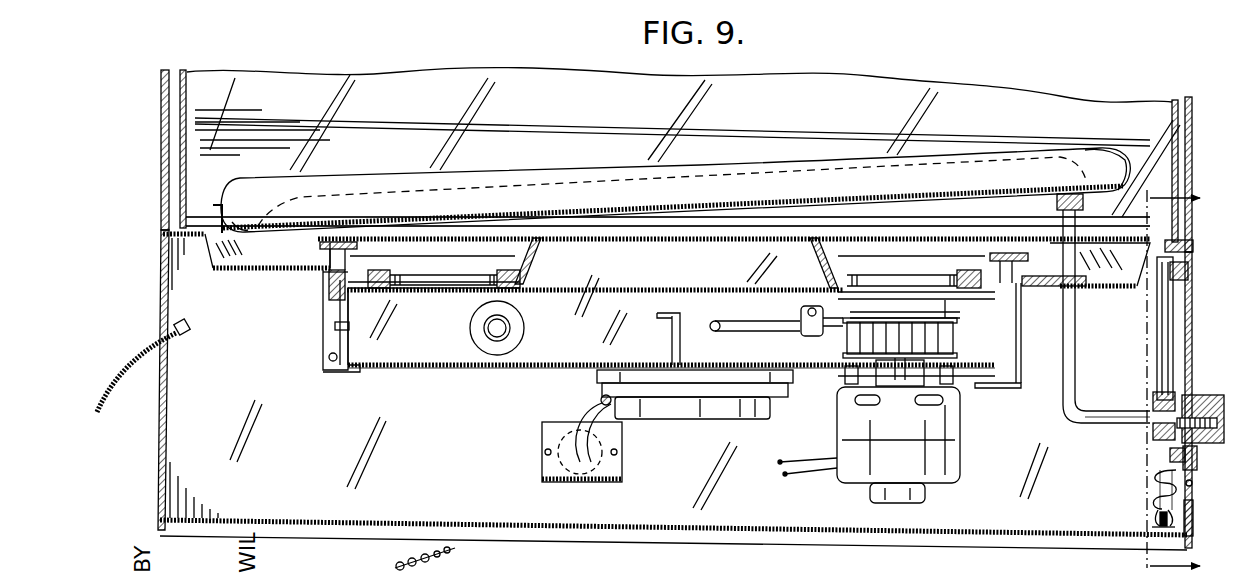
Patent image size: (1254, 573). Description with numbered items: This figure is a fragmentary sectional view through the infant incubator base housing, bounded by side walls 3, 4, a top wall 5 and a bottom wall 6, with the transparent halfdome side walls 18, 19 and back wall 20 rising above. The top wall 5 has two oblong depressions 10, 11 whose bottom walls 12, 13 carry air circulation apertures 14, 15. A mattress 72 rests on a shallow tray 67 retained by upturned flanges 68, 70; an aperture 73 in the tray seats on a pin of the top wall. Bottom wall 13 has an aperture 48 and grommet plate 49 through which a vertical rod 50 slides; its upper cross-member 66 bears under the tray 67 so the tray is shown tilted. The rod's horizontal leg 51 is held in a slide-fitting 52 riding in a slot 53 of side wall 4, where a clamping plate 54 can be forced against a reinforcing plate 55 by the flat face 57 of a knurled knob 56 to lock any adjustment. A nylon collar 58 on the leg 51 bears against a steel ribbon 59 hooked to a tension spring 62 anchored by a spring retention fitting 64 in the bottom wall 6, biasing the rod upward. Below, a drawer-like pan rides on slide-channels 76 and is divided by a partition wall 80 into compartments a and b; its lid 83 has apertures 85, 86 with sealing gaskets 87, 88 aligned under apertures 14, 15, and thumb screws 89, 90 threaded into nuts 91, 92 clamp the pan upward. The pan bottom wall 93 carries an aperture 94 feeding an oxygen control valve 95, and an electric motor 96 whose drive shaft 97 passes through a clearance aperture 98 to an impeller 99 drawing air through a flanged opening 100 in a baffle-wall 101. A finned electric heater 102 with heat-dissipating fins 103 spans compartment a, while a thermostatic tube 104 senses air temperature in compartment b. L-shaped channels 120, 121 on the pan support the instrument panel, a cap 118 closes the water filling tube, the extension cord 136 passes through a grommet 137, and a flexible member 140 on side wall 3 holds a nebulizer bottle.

The side wall 3 is at (160, 323).
The side wall 4 is at (1190, 271).
The top wall 5 is at (703, 242).
The bottom wall 6 is at (723, 526).
The depression 10 is at (253, 258).
The depression 11 is at (928, 248).
The bottom wall 12 is at (287, 273).
The bottom wall 13 is at (1106, 290).
The air circulation aperture 14 is at (455, 270).
The air circulation aperture 15 is at (872, 262).
The side wall 18 is at (163, 120).
The side wall 19 is at (1192, 130).
The back wall 20 is at (998, 103).
The aperture 48 is at (1068, 288).
The grommet plate 49 is at (1092, 275).
The vertical rod 50 is at (1072, 328).
The horizontal leg 51 is at (1120, 422).
The slide-fitting 52 is at (1170, 457).
The slot 53 is at (1193, 329).
The clamping plate 54 is at (1198, 461).
The reinforcing plate 55 is at (1195, 526).
The knurled knob 56 is at (1226, 400).
The flat face 57 is at (1205, 395).
The nylon collar 58 is at (1154, 400).
The steel ribbon 59 is at (1158, 345).
The tension spring 62 is at (1150, 485).
The spring retention fitting 64 is at (1155, 523).
The cross-member 66 is at (1058, 205).
The tray 67 is at (892, 193).
The marginal flange 68 is at (218, 205).
The marginal flange 70 is at (1132, 175).
The mattress 72 is at (548, 175).
The aperture 73 is at (240, 232).
The slide-channel 76 is at (326, 343).
The partition wall 80 is at (672, 338).
The lid 83 is at (648, 288).
The aperture 85 is at (400, 290).
The aperture 86 is at (926, 296).
The sealing gasket 87 is at (374, 270).
The sealing gasket 88 is at (975, 275).
The thumb screw 89 is at (330, 260).
The thumb screw 90 is at (1020, 268).
The nut 91 is at (330, 296).
The nut 92 is at (1023, 316).
The bottom wall 93 is at (466, 370).
The aperture 94 is at (700, 370).
The oxygen control valve 95 is at (668, 418).
The electric motor 96 is at (960, 457).
The drive shaft 97 is at (957, 357).
The clearance aperture 98 is at (884, 386).
The impeller 99 is at (848, 338).
The flanged opening 100 is at (930, 315).
The baffle-wall 101 is at (958, 316).
The electric heater 102 is at (511, 333).
The heat-dissipating fins 103 is at (470, 333).
The thermostatic tube 104 is at (790, 312).
The cap 118 is at (392, 567).
The L-shaped channel 120 is at (356, 370).
The L-shaped channel 121 is at (980, 386).
The extension cord 136 is at (600, 400).
The grommet 137 is at (586, 484).
The flexible member 140 is at (103, 410).